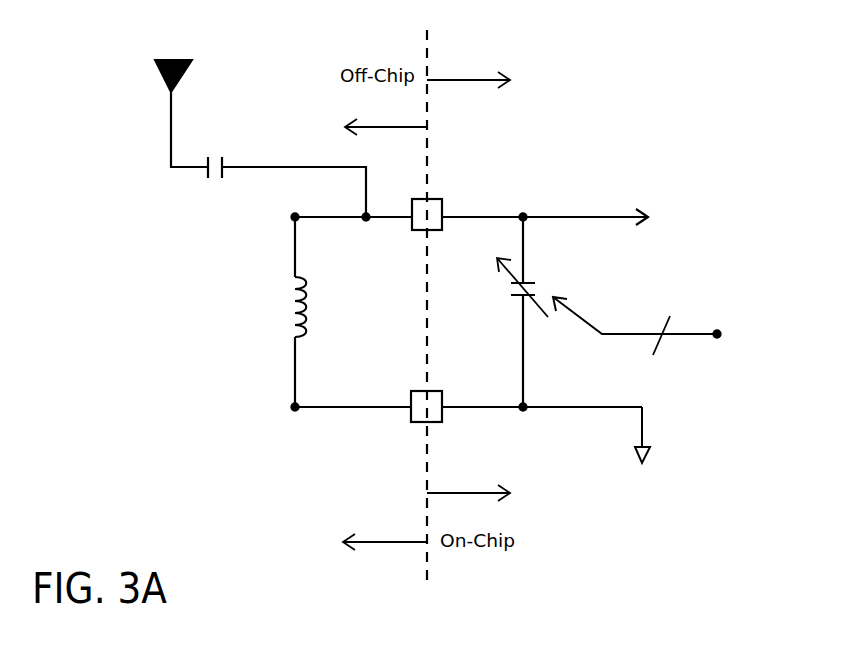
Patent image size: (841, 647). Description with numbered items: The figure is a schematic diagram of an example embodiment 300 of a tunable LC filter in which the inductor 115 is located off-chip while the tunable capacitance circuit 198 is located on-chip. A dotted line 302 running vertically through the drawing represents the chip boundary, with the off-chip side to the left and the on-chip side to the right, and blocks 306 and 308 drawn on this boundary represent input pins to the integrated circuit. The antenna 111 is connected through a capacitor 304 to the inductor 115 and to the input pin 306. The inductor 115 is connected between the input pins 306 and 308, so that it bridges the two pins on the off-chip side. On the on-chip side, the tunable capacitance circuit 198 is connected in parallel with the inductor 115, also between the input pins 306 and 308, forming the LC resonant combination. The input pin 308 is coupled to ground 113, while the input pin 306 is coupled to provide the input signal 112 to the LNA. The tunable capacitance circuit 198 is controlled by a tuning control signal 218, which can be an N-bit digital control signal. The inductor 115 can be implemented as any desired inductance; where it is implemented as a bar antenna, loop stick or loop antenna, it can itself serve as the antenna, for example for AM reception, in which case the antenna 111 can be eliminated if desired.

The tunable LC filter embodiment 300 is at (643, 112).
The dotted line 302 is at (428, 48).
The antenna 111 is at (171, 93).
The capacitor 304 is at (224, 160).
The input pin 306 is at (437, 198).
The input pin 308 is at (430, 423).
The inductor 115 is at (305, 308).
The tunable capacitance circuit 198 is at (530, 280).
The tuning control signal 218 is at (690, 332).
The input signal 112 is at (597, 216).
The ground 113 is at (652, 460).